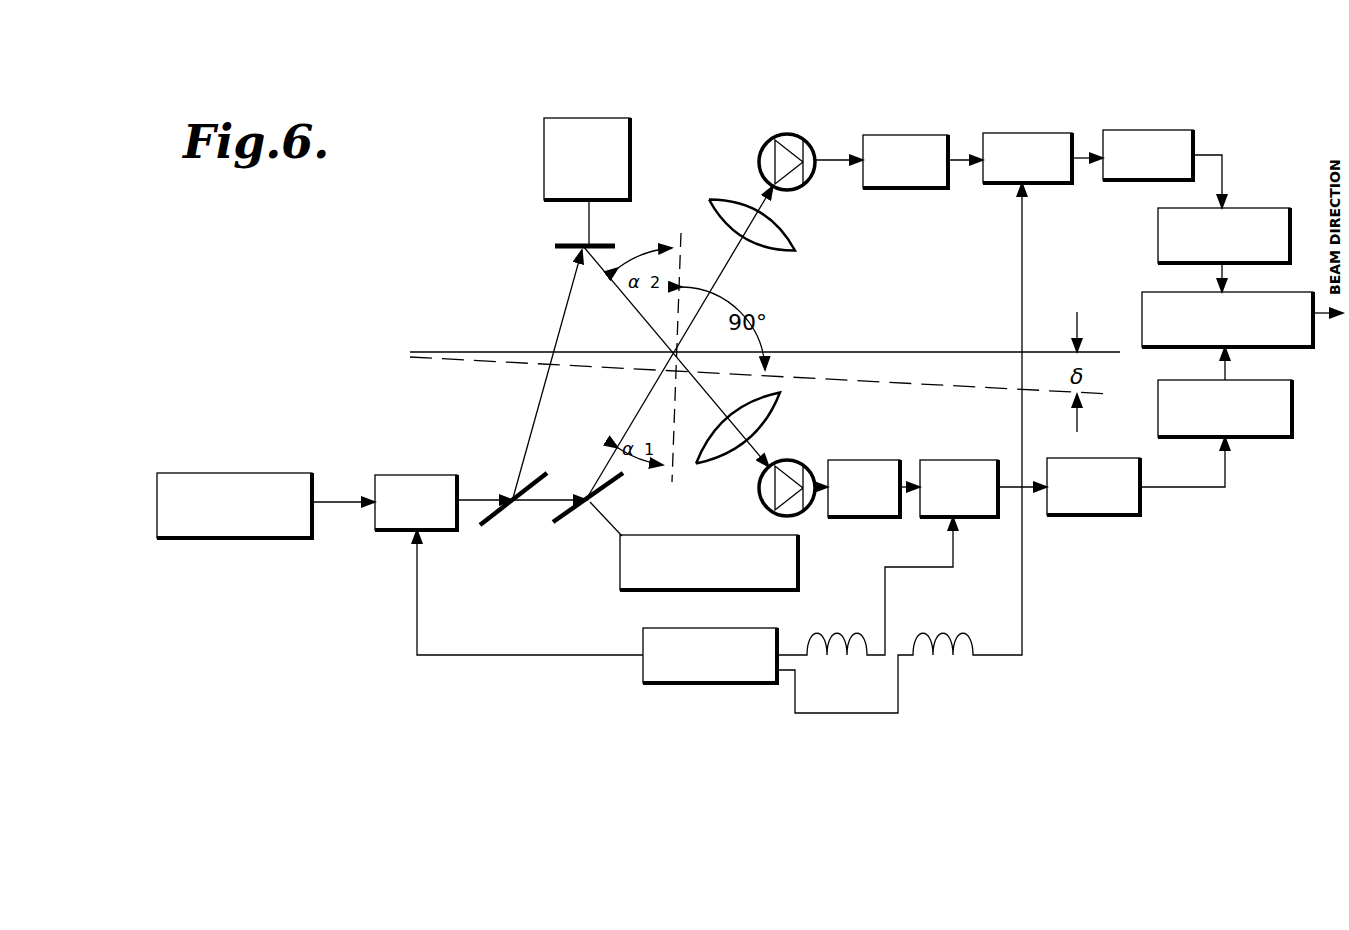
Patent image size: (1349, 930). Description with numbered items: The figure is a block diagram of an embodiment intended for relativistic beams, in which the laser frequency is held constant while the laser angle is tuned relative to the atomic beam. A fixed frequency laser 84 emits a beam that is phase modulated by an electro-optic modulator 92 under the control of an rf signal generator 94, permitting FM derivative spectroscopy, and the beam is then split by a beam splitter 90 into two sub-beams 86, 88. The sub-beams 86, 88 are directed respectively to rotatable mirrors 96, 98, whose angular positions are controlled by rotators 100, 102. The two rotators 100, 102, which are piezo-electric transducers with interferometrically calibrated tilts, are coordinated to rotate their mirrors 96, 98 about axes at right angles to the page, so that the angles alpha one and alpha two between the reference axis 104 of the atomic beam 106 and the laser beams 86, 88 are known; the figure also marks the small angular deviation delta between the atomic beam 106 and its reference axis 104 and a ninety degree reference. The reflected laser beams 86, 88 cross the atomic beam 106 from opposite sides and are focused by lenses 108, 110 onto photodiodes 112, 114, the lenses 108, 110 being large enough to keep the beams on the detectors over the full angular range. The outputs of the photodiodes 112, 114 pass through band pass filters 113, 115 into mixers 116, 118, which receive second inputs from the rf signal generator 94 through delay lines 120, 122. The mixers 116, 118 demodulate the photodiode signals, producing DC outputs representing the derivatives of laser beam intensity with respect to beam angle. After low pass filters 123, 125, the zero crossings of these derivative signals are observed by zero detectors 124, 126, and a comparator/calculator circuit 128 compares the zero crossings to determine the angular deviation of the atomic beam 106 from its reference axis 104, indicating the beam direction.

The fixed frequency laser 84 is at (200, 538).
The laser beam 86 is at (624, 428).
The laser beam 88 is at (540, 385).
The beam splitter 90 is at (505, 520).
The electro-optic modulator 92 is at (390, 530).
The rf signal generator 94 is at (652, 683).
The rotatable mirror 96 is at (575, 520).
The rotatable mirror 98 is at (555, 246).
The rotator 100 is at (798, 562).
The rotator 102 is at (544, 159).
The reference axis 104 is at (940, 388).
The atomic beam 106 is at (890, 350).
The lens 108 is at (797, 236).
The lens 110 is at (782, 406).
The photodiode 112 is at (794, 134).
The band pass filter 113 is at (904, 135).
The photodiode 114 is at (760, 500).
The band pass filter 115 is at (880, 460).
The mixer 116 is at (1024, 133).
The mixer 118 is at (944, 460).
The delay line 120 is at (924, 630).
The delay line 122 is at (866, 596).
The low pass filter 123 is at (1163, 130).
The zero detector 124 is at (1278, 208).
The low pass filter 125 is at (1140, 505).
The zero detector 126 is at (1278, 437).
The comparator/calculator circuit 128 is at (1154, 292).